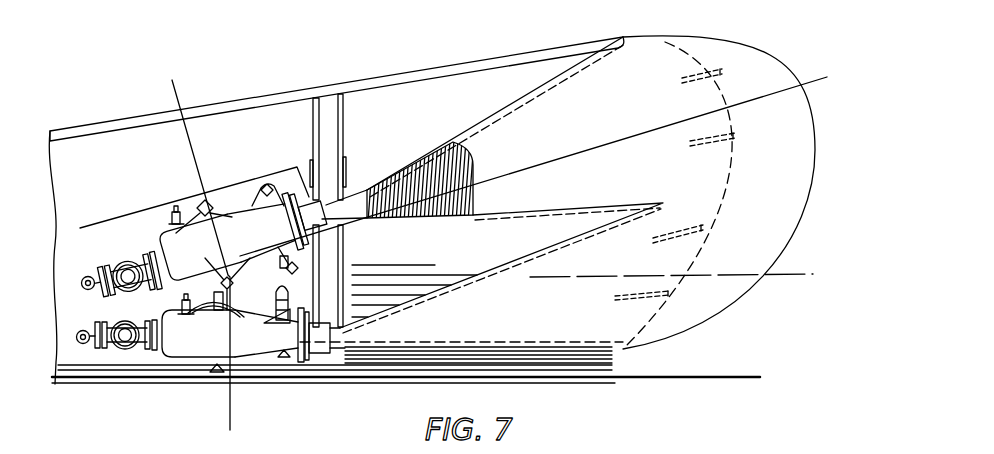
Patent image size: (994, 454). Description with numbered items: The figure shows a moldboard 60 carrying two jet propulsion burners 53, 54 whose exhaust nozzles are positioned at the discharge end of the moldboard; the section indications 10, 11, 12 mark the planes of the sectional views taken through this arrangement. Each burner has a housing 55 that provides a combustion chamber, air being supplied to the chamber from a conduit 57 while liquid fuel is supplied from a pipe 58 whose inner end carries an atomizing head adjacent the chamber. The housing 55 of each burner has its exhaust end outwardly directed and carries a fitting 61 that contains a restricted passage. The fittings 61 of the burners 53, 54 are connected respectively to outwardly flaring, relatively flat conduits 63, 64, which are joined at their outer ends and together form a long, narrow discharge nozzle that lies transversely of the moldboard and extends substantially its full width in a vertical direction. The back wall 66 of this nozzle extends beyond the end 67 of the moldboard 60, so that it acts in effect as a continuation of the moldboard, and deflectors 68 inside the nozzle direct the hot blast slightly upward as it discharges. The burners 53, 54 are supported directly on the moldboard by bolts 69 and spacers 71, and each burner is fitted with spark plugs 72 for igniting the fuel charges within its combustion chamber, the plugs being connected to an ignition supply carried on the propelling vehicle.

The section line 10- 10 is at (84, 240).
The section line 11- 11 is at (158, 92).
The section line 12- 12 is at (555, 263).
The jet propulsion burner 53 is at (239, 226).
The jet propulsion burner 54 is at (191, 351).
The housing 55 is at (170, 234).
The conduit 57 is at (124, 332).
The pipe 58 is at (82, 332).
The moldboard 60 is at (490, 86).
The fitting 61 is at (320, 208).
The outwardly flaring flat conduit 63 is at (360, 190).
The outwardly flaring flat conduit 64 is at (373, 327).
The back wall 66 is at (791, 193).
The end of the moldboard 67 is at (712, 185).
The deflector 68 is at (724, 72).
The bolt 69 is at (207, 203).
The spacer 71 is at (275, 298).
The spark plug 72 is at (172, 216).